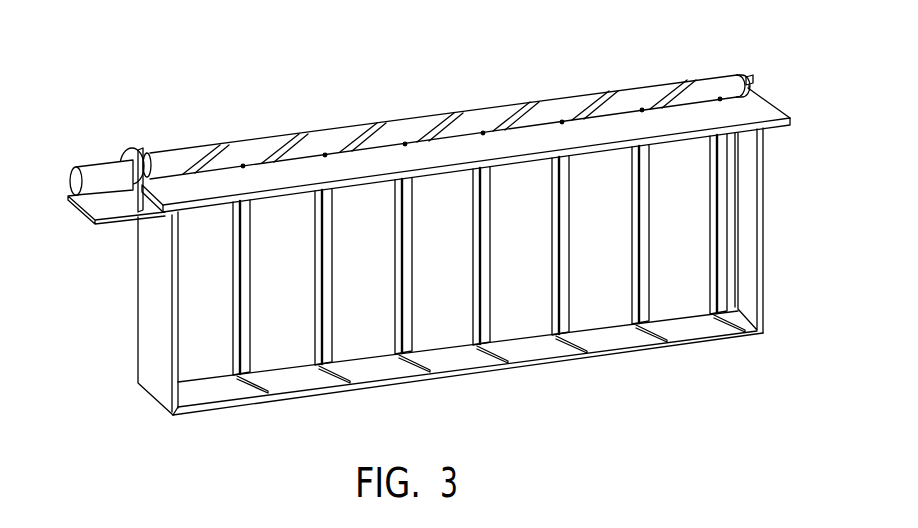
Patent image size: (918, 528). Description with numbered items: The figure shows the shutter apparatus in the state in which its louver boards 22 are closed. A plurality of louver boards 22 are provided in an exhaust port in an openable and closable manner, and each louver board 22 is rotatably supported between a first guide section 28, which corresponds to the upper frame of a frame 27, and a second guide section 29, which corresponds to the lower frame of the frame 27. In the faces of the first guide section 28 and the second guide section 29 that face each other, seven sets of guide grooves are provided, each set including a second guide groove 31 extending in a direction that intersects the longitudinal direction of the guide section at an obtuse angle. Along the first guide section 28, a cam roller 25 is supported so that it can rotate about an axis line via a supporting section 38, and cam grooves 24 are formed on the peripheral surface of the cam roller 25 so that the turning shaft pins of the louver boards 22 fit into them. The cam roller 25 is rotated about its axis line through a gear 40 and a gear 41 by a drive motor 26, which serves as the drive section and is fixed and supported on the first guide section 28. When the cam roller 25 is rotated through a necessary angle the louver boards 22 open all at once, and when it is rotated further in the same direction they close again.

The louver board 22 is at (698, 227).
The cam groove 24 is at (535, 97).
The cam roller 25 is at (410, 122).
The drive motor 26 is at (100, 165).
The frame 27 is at (131, 316).
The first guide section 28 is at (771, 108).
The second guide section 29 is at (698, 328).
The second guide groove 31 is at (488, 357).
The supporting section 38 is at (740, 76).
The gear 40 is at (133, 218).
The gear 41 is at (128, 149).